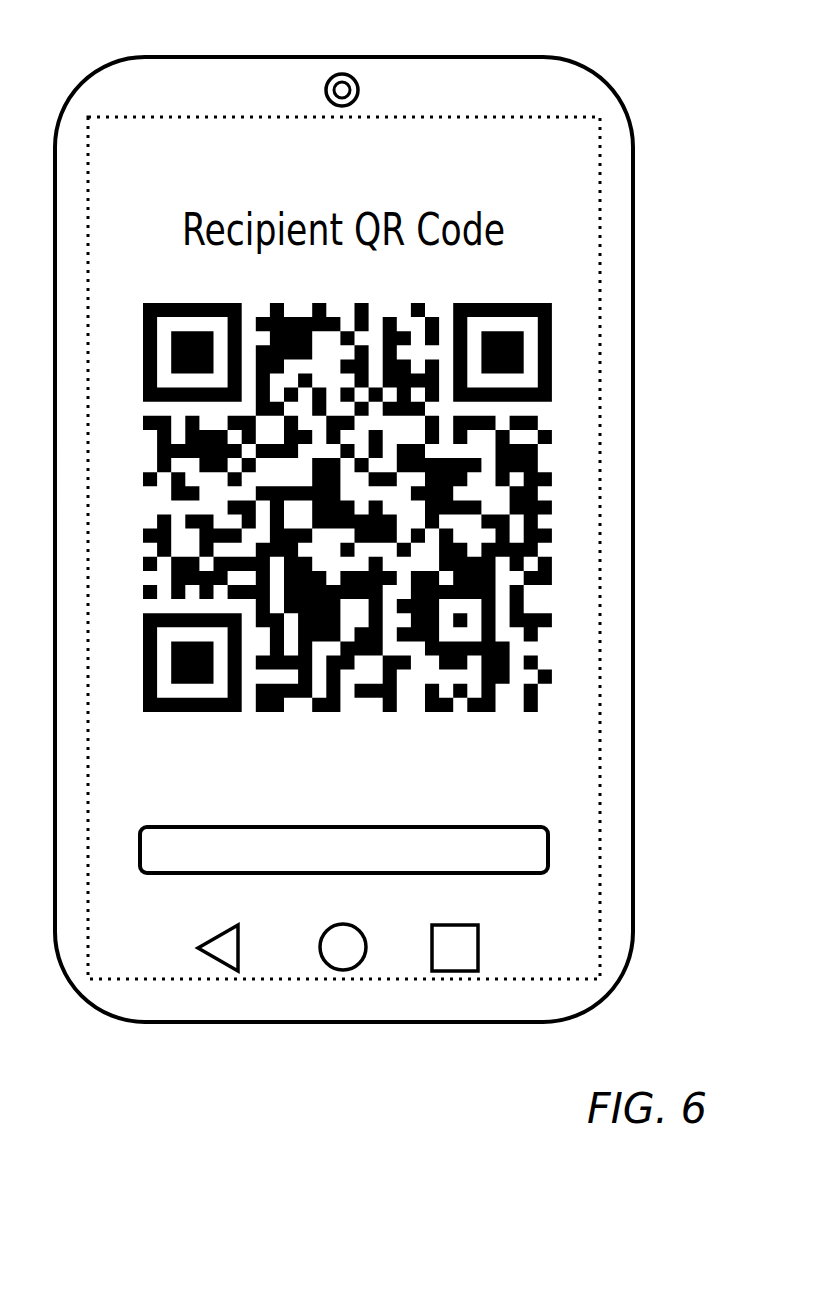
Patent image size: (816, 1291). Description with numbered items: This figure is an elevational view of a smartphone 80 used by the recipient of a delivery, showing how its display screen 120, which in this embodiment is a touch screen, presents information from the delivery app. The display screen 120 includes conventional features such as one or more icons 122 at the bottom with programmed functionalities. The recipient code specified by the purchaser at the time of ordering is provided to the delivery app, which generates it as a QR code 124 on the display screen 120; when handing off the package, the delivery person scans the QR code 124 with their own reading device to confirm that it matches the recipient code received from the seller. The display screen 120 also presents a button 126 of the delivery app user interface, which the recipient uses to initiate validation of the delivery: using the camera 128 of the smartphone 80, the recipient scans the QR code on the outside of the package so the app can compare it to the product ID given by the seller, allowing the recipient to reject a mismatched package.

The smartphone 80 is at (114, 58).
The display screen 120 is at (600, 257).
The icons 122 is at (461, 972).
The QR code 124 is at (150, 283).
The button 126 is at (418, 826).
The camera 128 is at (358, 80).